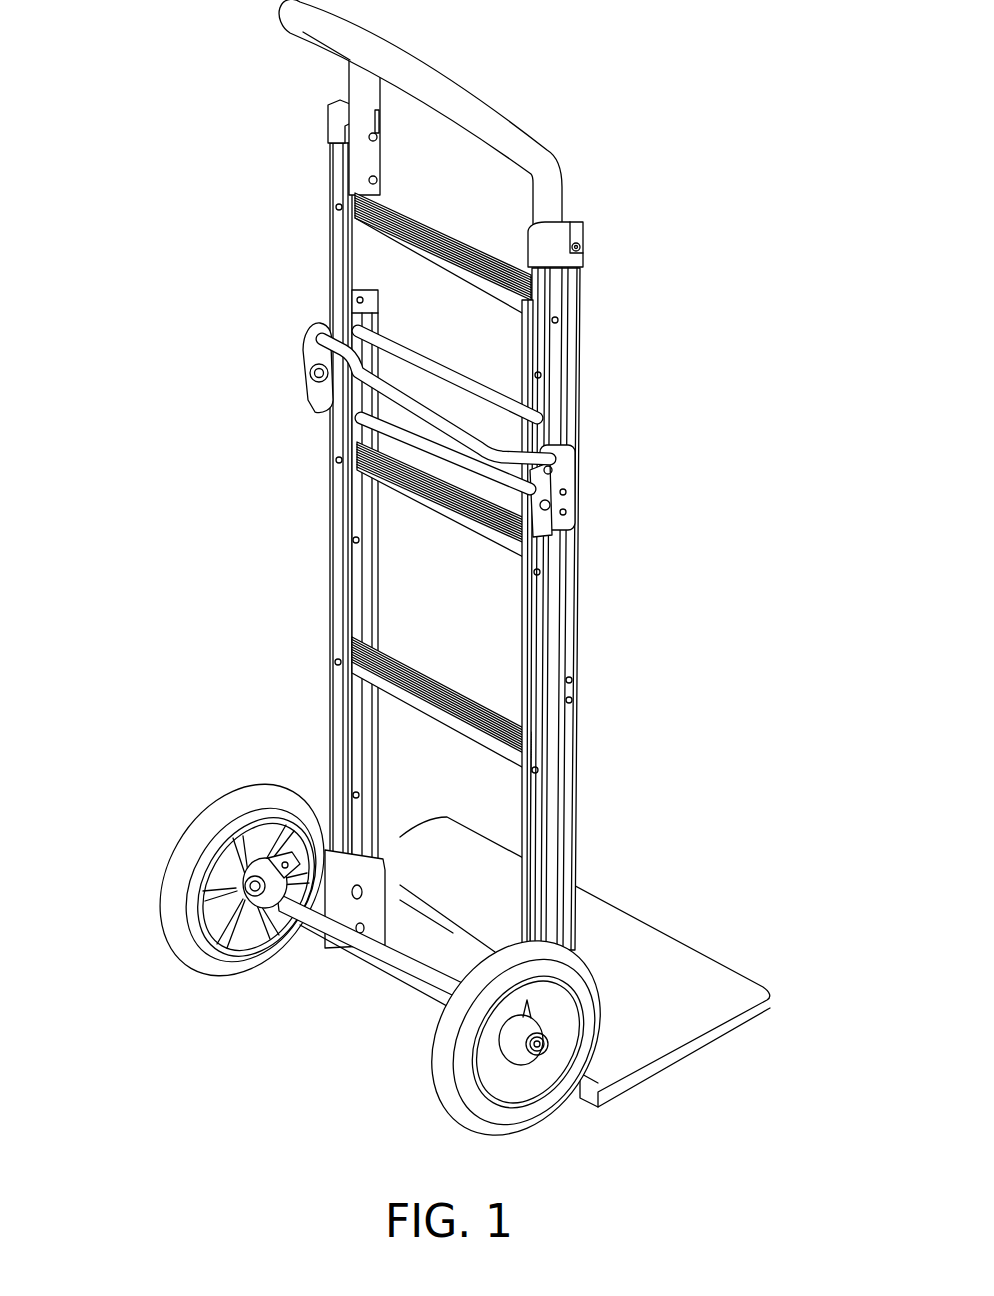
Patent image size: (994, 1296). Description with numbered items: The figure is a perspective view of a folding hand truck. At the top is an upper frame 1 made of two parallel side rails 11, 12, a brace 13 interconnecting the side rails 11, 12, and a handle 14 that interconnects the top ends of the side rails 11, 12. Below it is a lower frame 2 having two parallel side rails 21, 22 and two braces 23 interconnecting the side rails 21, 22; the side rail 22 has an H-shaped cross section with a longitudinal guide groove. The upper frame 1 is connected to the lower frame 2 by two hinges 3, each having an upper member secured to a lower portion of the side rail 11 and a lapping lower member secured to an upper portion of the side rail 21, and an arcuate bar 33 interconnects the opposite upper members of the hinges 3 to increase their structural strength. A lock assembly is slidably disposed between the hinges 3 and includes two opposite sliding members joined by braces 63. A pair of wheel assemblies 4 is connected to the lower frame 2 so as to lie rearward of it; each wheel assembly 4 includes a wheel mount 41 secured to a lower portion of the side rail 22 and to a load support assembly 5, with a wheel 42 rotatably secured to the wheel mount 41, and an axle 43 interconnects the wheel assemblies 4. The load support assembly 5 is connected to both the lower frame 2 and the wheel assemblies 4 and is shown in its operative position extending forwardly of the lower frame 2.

The upper frame 1 is at (456, 475).
The lower frame 2 is at (448, 620).
The hinge 3 is at (391, 419).
The wheel assembly 4 is at (355, 939).
The load support assembly 5 is at (697, 920).
The side rail 11 is at (340, 252).
The side rail 12 is at (572, 380).
The brace 13 is at (432, 227).
The handle 14 is at (417, 73).
The side rail 21 is at (340, 623).
The side rail 22 is at (566, 800).
The brace 23 is at (430, 507).
The arcuate bar 33 is at (417, 405).
The wheel mount 41 is at (303, 857).
The wheel 42 is at (173, 893).
The axle 43 is at (385, 958).
The brace 63 is at (443, 364).